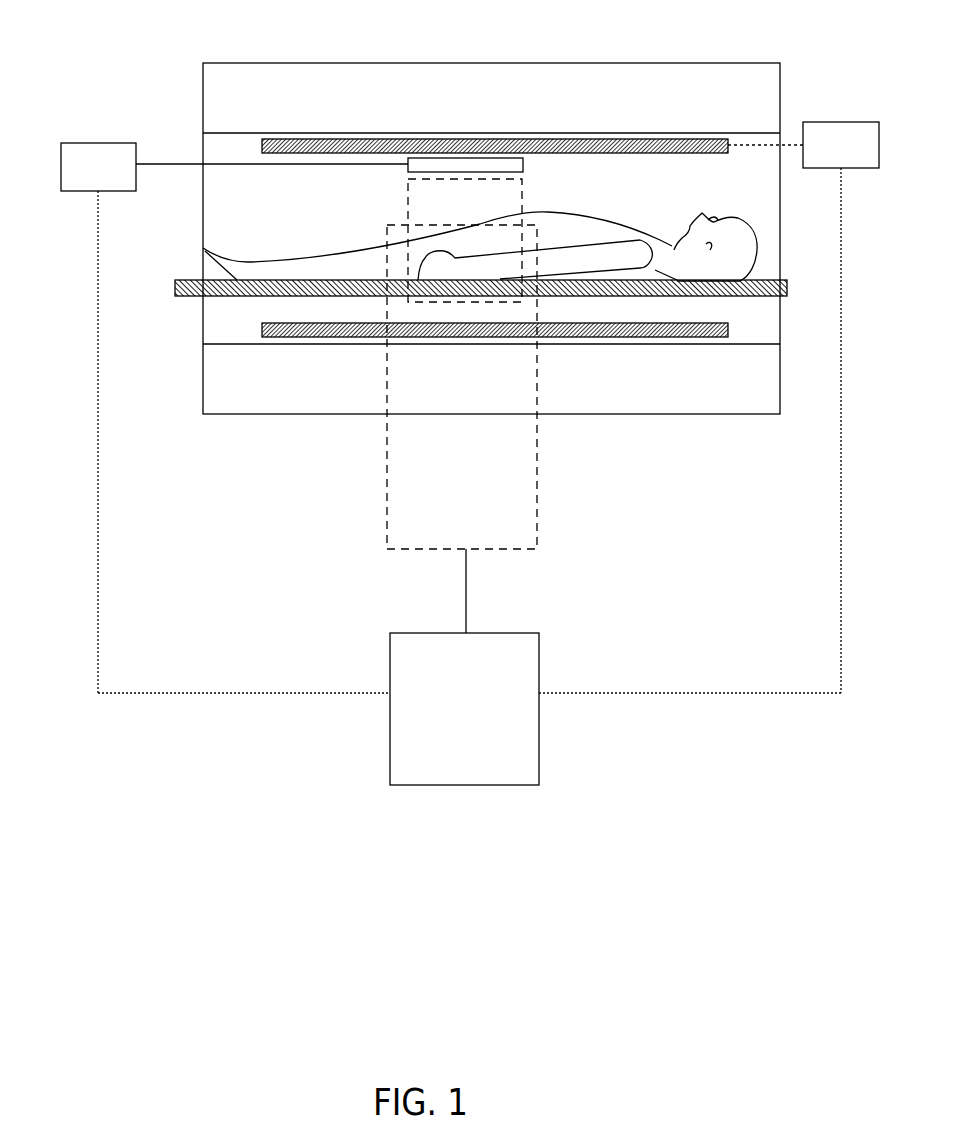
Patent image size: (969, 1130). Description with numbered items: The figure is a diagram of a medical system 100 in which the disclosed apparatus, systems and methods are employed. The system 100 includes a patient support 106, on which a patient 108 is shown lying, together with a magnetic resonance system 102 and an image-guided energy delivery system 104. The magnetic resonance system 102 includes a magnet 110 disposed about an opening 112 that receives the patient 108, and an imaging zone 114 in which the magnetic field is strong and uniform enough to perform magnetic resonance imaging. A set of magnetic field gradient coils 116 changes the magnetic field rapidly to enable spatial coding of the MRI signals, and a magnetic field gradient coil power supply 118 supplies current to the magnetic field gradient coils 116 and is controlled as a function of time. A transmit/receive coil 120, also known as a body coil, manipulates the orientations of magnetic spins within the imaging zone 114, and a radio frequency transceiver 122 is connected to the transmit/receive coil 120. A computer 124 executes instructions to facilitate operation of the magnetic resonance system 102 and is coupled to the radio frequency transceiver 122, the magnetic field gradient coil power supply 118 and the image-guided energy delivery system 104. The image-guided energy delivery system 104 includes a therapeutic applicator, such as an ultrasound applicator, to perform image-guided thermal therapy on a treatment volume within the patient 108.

The medical system 100 is at (103, 43).
The magnetic resonance system 102 is at (193, 60).
The image-guided energy delivery system 104 is at (387, 479).
The patient support 106 is at (175, 289).
The patient 108 is at (757, 247).
The magnet 110 is at (780, 84).
The opening 112 is at (240, 222).
The imaging zone 114 is at (408, 206).
The magnetic field gradient coils 116 is at (262, 146).
The magnetic field gradient coil power supply 118 is at (841, 122).
The transmit/receive coil 120 is at (523, 163).
The radio frequency transceiver 122 is at (90, 143).
The computer 124 is at (390, 657).